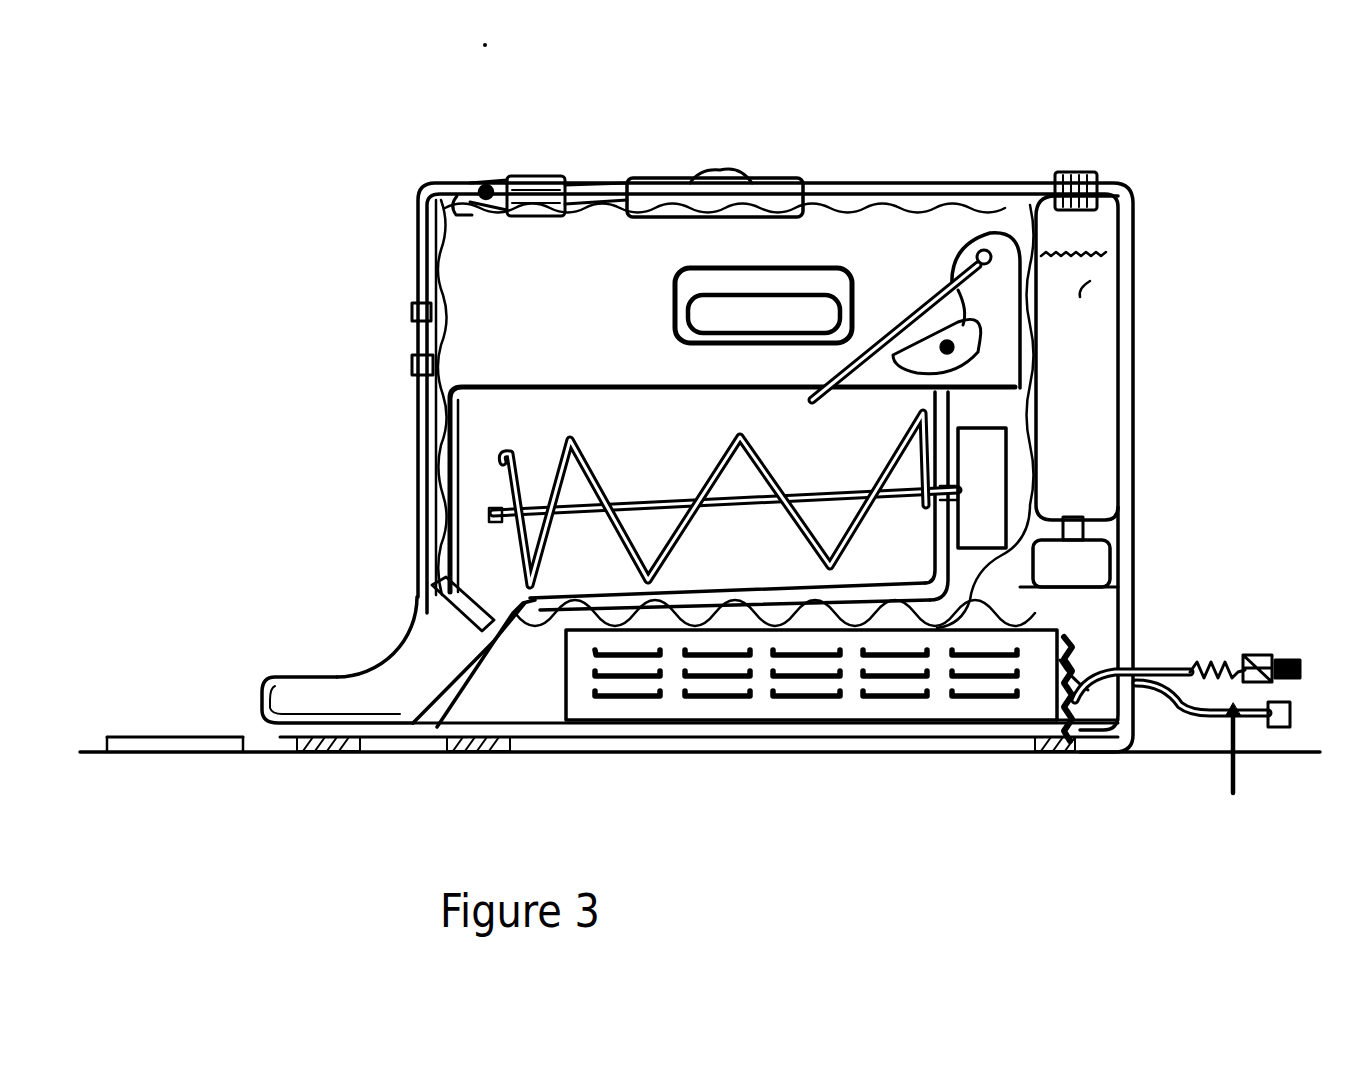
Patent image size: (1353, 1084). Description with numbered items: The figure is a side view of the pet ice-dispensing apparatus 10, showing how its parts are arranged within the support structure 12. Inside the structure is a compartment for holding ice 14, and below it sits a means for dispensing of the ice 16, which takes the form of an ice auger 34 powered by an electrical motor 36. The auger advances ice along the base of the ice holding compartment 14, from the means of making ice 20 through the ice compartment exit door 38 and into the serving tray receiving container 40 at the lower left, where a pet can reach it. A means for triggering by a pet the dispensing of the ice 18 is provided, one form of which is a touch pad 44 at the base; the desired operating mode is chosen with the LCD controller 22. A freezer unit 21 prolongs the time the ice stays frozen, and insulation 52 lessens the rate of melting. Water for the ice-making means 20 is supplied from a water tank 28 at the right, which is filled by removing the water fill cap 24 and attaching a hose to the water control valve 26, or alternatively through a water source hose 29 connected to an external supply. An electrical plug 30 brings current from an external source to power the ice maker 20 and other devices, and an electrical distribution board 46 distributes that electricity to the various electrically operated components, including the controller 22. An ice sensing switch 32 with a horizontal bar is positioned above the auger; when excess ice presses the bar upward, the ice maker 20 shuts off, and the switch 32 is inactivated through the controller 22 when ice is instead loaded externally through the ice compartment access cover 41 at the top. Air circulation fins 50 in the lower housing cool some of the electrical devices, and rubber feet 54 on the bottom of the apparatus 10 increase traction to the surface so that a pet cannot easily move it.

The apparatus 10 is at (392, 526).
The support structure 12 is at (1120, 582).
The compartment for holding ice 14 is at (540, 435).
The means for dispensing of the ice 16 is at (640, 487).
The means for triggering by a pet the dispensing of the ice 18 is at (418, 365).
The means of making ice 20 is at (995, 248).
The freezer unit 21 is at (573, 692).
The LCD controller 22 is at (480, 186).
The water fill cap 24 is at (1100, 183).
The water control valve 26 is at (1067, 562).
The water tank 28 is at (1078, 298).
The water source hose 29 is at (1213, 776).
The electrical plug 30 is at (1253, 658).
The ice sensing switch 32 is at (868, 355).
The ice auger 34 is at (560, 490).
The electrical motor 36 is at (982, 492).
The ice compartment exit door 38 is at (490, 641).
The serving tray receiving container 40 is at (322, 713).
The ice compartment access cover 41 is at (743, 177).
The touch pad 44 is at (183, 752).
The electrical distribution board 46 is at (1068, 705).
The air circulation fins 50 is at (787, 687).
The insulation 52 is at (421, 313).
The rubber feet 54 is at (1040, 755).